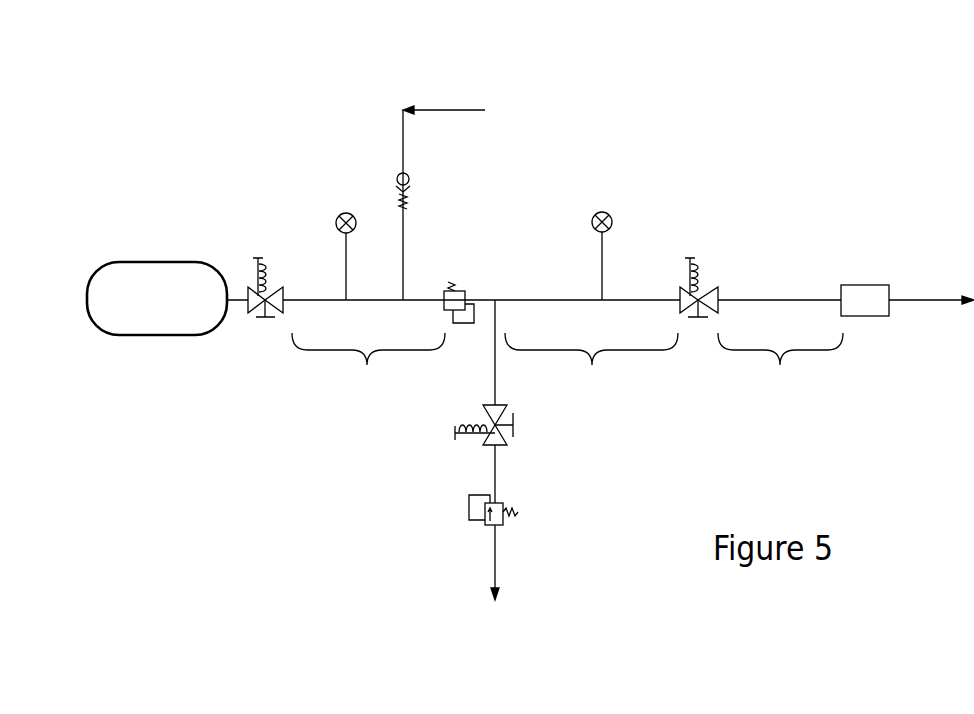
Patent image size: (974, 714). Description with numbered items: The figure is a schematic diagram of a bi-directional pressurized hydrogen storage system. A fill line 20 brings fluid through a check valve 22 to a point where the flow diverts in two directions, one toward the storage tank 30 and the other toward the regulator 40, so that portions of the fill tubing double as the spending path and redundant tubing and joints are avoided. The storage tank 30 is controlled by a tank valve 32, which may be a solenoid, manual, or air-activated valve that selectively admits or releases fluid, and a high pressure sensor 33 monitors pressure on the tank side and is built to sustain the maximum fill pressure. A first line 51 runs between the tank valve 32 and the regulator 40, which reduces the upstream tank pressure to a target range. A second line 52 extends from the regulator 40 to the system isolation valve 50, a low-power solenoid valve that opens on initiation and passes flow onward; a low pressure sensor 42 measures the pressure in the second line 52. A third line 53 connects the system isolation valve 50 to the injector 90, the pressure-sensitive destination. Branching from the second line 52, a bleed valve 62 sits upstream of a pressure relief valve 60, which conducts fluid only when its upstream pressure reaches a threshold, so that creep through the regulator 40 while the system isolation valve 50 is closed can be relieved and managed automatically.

The fill line 20 is at (468, 109).
The check valve 22 is at (400, 174).
The storage tank 30 is at (157, 298).
The tank valve 32 is at (274, 260).
The high pressure sensor 33 is at (347, 211).
The regulator 40 is at (470, 290).
The low pressure sensor 42 is at (603, 211).
The system isolation valve 50 is at (706, 261).
The first line 51 is at (368, 370).
The second line 52 is at (591, 370).
The third line 53 is at (780, 370).
The pressure relief valve 60 is at (505, 525).
The bleed valve 62 is at (514, 433).
The injector 90 is at (877, 284).